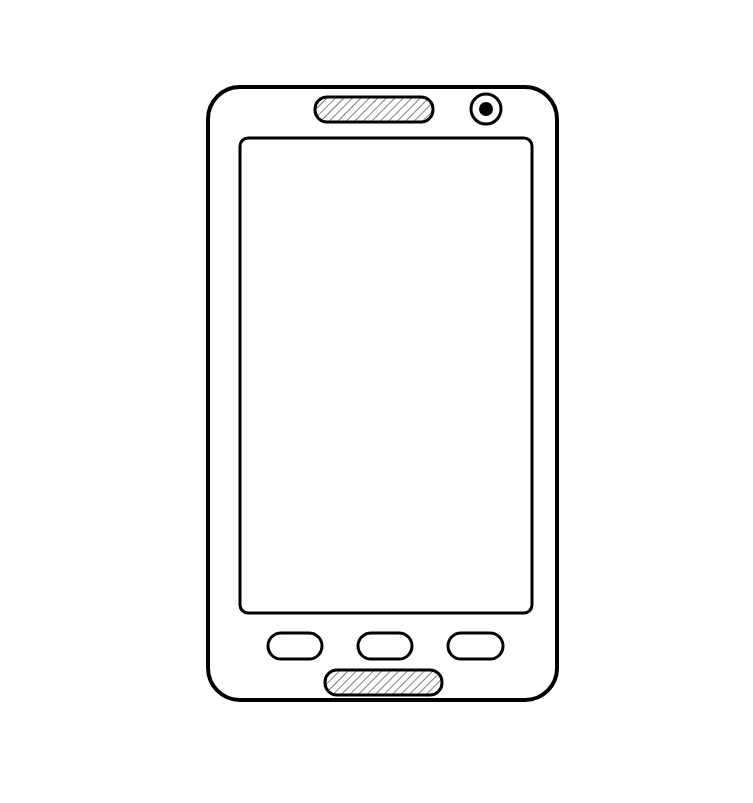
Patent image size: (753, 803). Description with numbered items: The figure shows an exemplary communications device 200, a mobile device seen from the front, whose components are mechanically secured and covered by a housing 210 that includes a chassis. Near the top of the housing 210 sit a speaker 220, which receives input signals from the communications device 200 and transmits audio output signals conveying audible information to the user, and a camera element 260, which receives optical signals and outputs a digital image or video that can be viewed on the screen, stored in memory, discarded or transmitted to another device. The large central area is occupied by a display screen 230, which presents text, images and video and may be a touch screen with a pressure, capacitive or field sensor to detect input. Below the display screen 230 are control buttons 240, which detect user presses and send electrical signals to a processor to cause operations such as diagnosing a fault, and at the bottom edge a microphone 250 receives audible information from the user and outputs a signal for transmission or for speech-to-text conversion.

The communications device 200 is at (142, 52).
The housing 210 is at (208, 415).
The speaker 220 is at (320, 113).
The display screen 230 is at (313, 261).
The control buttons 240 is at (515, 631).
The microphone 250 is at (325, 681).
The camera element 260 is at (517, 104).